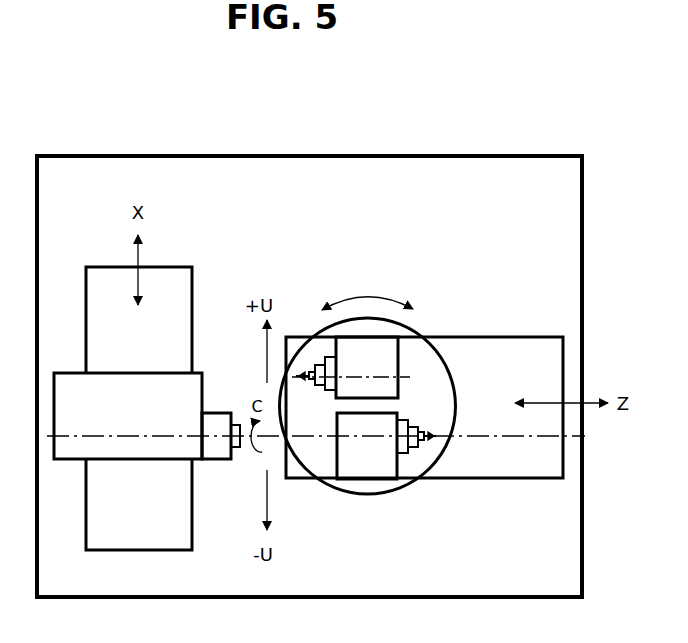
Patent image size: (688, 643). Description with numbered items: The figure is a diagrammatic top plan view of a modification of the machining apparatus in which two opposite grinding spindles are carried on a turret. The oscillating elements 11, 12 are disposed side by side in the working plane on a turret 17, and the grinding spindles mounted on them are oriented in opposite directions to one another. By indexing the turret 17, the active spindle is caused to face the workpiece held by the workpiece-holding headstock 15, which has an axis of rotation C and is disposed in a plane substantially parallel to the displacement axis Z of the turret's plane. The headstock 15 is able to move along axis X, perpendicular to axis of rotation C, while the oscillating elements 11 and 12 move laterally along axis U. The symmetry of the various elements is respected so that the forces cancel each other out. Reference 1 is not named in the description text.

The machine tool / lathe frame 1 is at (586, 251).
The oscillating element 11 is at (365, 458).
The oscillating element 12 is at (385, 355).
The workpiece-holding headstock 15 is at (217, 445).
The turret 17 is at (433, 392).